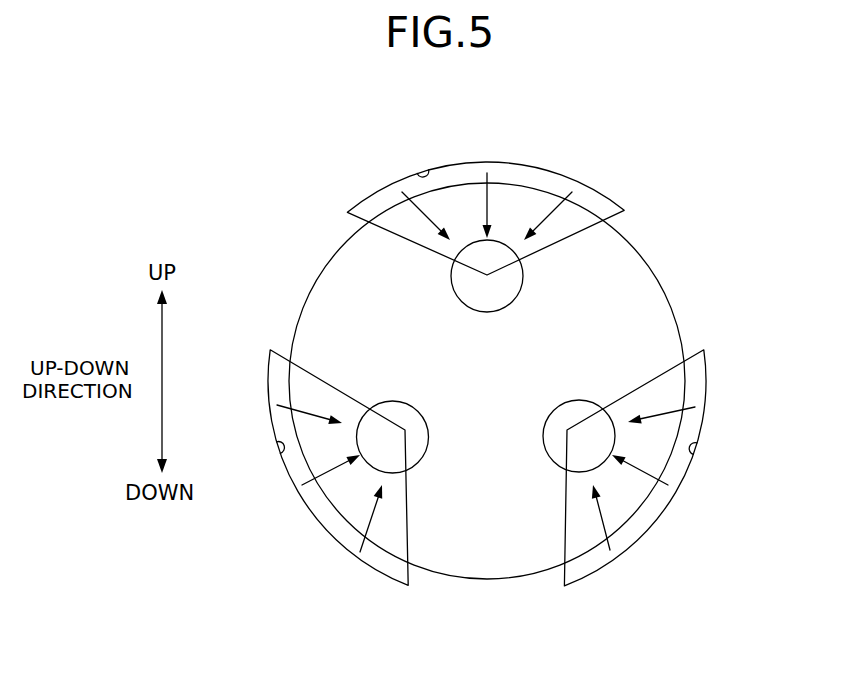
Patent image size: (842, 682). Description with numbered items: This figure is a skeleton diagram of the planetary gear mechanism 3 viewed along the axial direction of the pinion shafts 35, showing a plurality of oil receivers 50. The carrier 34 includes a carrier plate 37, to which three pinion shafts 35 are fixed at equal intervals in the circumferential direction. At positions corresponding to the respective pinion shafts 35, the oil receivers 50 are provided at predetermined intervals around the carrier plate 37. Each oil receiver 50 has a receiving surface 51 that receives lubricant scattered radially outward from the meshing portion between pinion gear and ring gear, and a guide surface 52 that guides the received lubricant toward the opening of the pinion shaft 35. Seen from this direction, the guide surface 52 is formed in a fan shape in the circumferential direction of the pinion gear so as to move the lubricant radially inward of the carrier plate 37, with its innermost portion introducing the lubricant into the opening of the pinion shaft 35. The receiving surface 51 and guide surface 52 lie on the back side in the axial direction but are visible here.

The planetary gear mechanism 3 is at (682, 221).
The carrier 34 is at (676, 286).
The pinion shaft 35 is at (462, 302).
The carrier plate 37 is at (620, 351).
The oil receiver 50 is at (518, 152).
The receiving surface 51 is at (419, 176).
The guide surface 52 is at (567, 213).